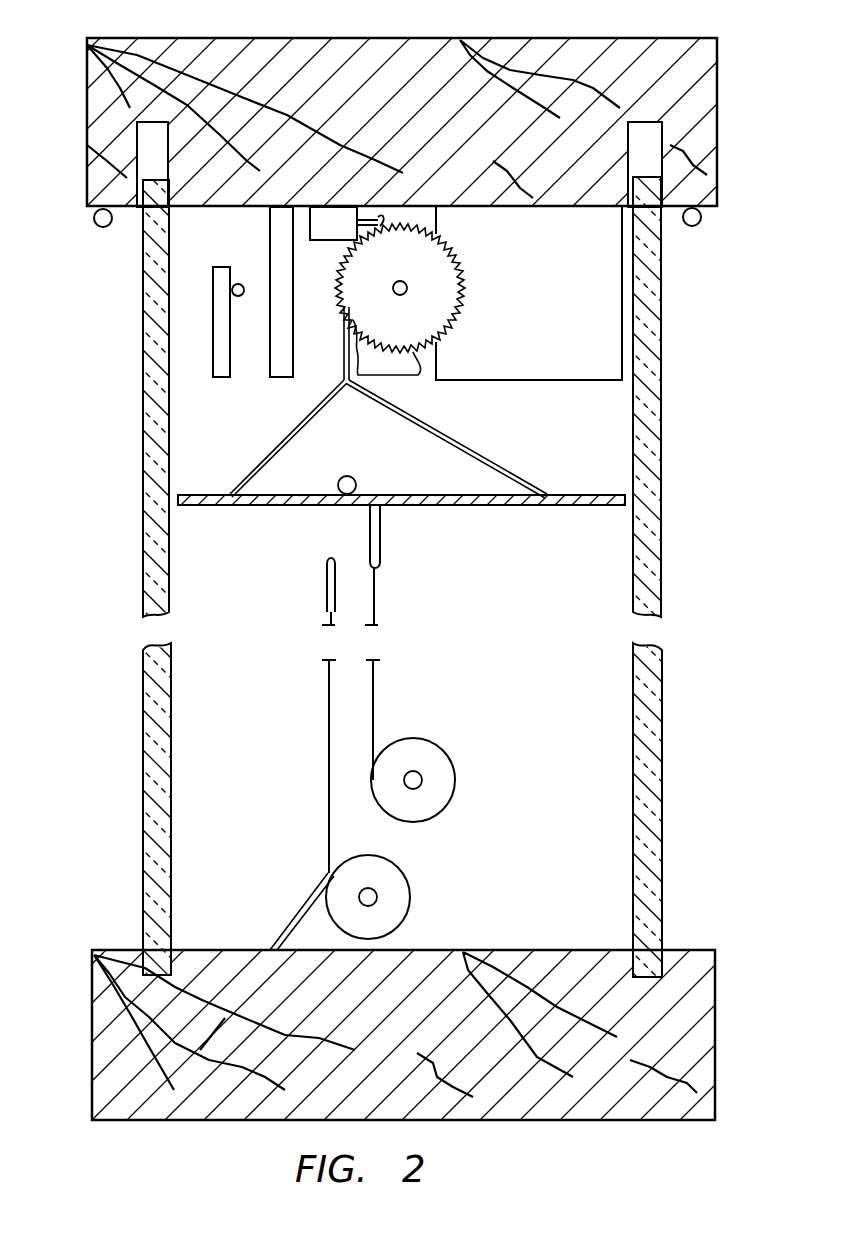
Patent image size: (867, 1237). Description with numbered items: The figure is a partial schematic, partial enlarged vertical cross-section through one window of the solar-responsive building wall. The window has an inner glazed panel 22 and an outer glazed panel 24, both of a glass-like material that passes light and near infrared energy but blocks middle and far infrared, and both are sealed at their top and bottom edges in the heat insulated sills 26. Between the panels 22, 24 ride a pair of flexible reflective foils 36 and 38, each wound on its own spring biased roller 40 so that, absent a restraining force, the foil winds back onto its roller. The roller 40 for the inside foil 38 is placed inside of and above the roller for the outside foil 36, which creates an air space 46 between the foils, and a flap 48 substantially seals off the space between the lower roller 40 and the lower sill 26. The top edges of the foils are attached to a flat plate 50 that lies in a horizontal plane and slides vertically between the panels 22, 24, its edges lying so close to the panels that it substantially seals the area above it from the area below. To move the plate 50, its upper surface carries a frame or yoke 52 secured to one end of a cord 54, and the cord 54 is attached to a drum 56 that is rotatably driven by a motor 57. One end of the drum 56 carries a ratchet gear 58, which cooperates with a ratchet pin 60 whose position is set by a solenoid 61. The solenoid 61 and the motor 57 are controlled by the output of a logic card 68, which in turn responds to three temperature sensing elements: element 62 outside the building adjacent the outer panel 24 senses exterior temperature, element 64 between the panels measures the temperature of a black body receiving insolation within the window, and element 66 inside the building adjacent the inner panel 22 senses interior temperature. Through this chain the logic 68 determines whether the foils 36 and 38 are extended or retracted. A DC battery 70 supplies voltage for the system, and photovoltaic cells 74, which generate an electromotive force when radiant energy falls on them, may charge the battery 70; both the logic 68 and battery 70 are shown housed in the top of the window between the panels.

The inner glazed panel 22 is at (662, 907).
The outer glazed panel 24 is at (143, 868).
The heat insulated sill 26 is at (390, 38).
The flexible foil 36 is at (328, 787).
The flexible foil 38 is at (375, 702).
The spring biased roller 40 is at (430, 758).
The air space 46 is at (366, 750).
The flap 48 is at (293, 917).
The flat plate 50 is at (276, 495).
The frame or yoke 52 is at (332, 402).
The cord 54 is at (343, 346).
The drum 56 is at (440, 275).
The motor 57 is at (402, 365).
The ratchet gear 58 is at (470, 294).
The ratchet pin 60 is at (375, 213).
The solenoid 61 is at (332, 232).
The temperature sensing element 62 is at (105, 228).
The temperature sensing element 64 is at (242, 285).
The temperature sensing element 66 is at (700, 225).
The logic card 68 is at (285, 377).
The DC battery 70 is at (552, 366).
The photovoltaic cells 74 is at (221, 377).